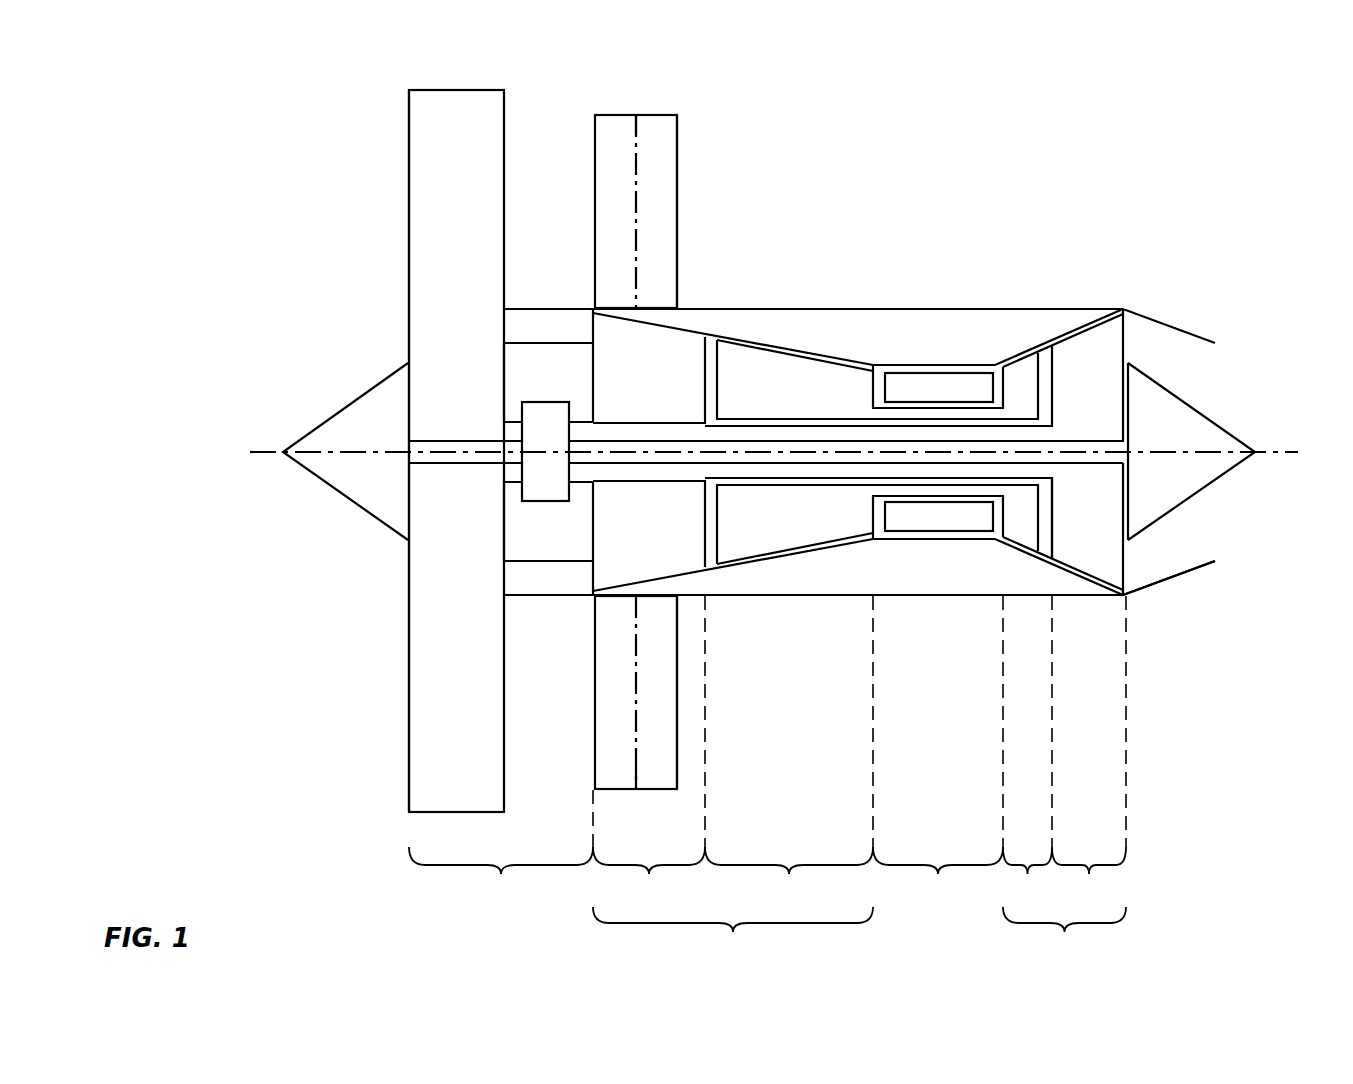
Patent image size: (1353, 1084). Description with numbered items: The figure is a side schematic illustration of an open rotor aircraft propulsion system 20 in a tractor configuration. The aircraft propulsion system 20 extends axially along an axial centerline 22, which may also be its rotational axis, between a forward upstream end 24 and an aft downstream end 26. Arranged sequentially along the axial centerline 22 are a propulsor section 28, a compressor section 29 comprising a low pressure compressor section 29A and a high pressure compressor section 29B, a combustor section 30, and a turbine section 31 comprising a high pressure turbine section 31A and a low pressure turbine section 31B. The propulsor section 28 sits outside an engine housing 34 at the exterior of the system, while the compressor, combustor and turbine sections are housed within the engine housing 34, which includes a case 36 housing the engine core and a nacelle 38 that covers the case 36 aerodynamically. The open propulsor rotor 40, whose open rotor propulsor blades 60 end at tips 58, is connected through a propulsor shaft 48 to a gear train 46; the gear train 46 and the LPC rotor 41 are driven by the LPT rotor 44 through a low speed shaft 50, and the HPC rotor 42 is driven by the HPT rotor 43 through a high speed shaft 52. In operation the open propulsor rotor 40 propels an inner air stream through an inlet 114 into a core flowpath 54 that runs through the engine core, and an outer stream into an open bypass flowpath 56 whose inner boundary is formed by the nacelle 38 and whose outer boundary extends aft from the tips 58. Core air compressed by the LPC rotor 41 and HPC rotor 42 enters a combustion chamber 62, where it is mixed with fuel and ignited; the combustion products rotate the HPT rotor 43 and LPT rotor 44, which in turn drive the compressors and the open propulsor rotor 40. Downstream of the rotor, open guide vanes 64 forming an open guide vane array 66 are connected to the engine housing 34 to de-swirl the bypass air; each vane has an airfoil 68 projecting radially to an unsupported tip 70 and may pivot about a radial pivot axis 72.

The aircraft propulsion system 20 is at (290, 127).
The axial centerline 22 is at (1290, 460).
The upstream end 24 is at (283, 452).
The downstream end 26 is at (1258, 451).
The propulsor section 28 is at (501, 877).
The compressor section 29 is at (733, 936).
The low pressure compressor section 29A is at (649, 877).
The high pressure compressor section 29B is at (789, 877).
The combustor section 30 is at (938, 877).
The turbine section 31 is at (1064, 936).
The high pressure turbine section 31A is at (1027, 871).
The low pressure turbine section 31B is at (1089, 871).
The engine housing 34 is at (773, 301).
The case 36 is at (731, 339).
The nacelle 38 is at (830, 308).
The open propulsor rotor 40 is at (400, 576).
The LPC rotor 41 is at (592, 532).
The HPC rotor 42 is at (706, 535).
The HPT rotor 43 is at (1050, 517).
The LPT rotor 44 is at (1125, 565).
The gear train 46 is at (531, 457).
The propulsor shaft 48 is at (514, 421).
The low speed shaft 50 is at (830, 484).
The high speed shaft 52 is at (880, 397).
The core flowpath 54 is at (531, 340).
The bypass flowpath 56 is at (526, 265).
The tips 58 is at (483, 90).
The open rotor propulsor blades 60 is at (408, 165).
The combustion chamber 62 is at (945, 389).
The open guide vanes 64 is at (682, 177).
The open guide vane array 66 is at (692, 137).
The airfoil 68 is at (622, 212).
The tip 70 is at (636, 115).
The pivot axis 72 is at (636, 122).
The inlet 114 is at (505, 327).